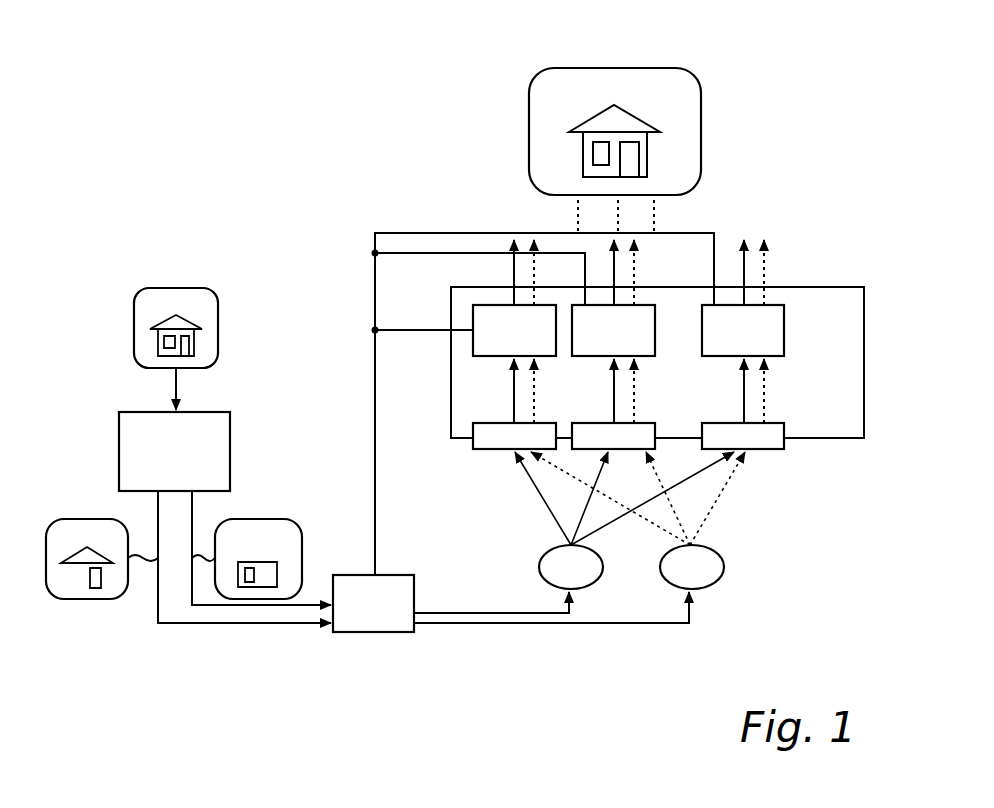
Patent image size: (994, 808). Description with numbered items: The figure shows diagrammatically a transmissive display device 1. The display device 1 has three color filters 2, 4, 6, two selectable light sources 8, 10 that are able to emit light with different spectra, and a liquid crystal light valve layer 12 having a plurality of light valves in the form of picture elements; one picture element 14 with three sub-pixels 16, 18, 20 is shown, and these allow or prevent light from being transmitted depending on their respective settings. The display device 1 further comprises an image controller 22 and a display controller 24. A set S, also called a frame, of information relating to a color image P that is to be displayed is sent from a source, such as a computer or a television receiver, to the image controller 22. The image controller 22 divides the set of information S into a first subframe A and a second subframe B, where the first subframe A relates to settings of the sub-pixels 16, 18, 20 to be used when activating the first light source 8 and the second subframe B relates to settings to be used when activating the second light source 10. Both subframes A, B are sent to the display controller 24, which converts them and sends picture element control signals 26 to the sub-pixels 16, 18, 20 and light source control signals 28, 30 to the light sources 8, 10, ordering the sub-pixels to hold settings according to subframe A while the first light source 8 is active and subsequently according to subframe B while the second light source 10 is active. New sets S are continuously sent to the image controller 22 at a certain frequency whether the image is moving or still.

The transmissive display device 1 is at (294, 146).
The color filter 2 is at (490, 451).
The color filter 4 is at (632, 451).
The color filter 6 is at (772, 451).
The first light source 8 is at (539, 563).
The second light source 10 is at (724, 561).
The liquid crystal light valve layer 12 is at (868, 333).
The picture element 14 is at (468, 317).
The sub-pixel 16 is at (498, 304).
The sub-pixel 18 is at (645, 304).
The sub-pixel 20 is at (775, 304).
The image controller 22 is at (118, 455).
The display controller 24 is at (375, 633).
The picture element control signals 26 is at (375, 455).
The light source control signal 28 is at (473, 612).
The light source control signal 30 is at (500, 629).
The color image P is at (633, 67).
The set of information S is at (175, 287).
The first subframe A is at (92, 600).
The second subframe B is at (272, 518).